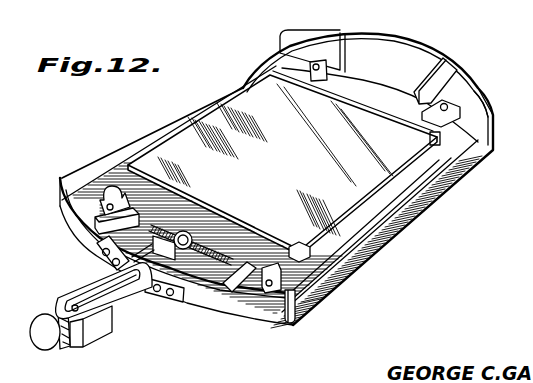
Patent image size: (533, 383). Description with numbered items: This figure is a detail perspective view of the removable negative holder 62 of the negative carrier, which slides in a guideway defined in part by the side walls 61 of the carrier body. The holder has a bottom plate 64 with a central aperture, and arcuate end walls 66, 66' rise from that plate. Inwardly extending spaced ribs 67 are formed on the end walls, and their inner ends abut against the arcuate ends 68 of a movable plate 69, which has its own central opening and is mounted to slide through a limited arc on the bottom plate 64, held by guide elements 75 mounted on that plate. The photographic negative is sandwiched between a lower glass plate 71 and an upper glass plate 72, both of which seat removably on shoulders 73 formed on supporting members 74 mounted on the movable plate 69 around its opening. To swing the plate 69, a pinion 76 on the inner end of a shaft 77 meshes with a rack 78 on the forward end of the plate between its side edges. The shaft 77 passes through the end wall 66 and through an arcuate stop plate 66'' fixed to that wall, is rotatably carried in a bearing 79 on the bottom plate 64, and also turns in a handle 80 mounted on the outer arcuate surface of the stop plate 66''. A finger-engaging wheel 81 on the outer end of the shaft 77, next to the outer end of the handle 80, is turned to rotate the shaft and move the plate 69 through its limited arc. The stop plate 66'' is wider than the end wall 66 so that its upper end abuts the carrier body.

The side walls 61 is at (440, 68).
The negative holder 62 is at (452, 208).
The bottom plate 64 is at (356, 212).
The end wall 66 is at (296, 308).
The end wall 66' is at (494, 87).
The stop plate 66'' is at (32, 183).
The ribs 67 is at (348, 45).
The arcuate shaped ends 68 is at (112, 178).
The movable plate 69 is at (248, 77).
The glass plate 71 is at (335, 245).
The upper glass plate 72 is at (233, 104).
The shoulders 73 is at (289, 326).
The supporting members 74 is at (167, 135).
The guide elements 75 is at (314, 60).
The pinion 76 is at (183, 233).
The shaft 77 is at (106, 297).
The rack 78 is at (218, 248).
The bearing 79 is at (177, 304).
The handle 80 is at (80, 338).
The finger-engaging wheel 81 is at (47, 350).